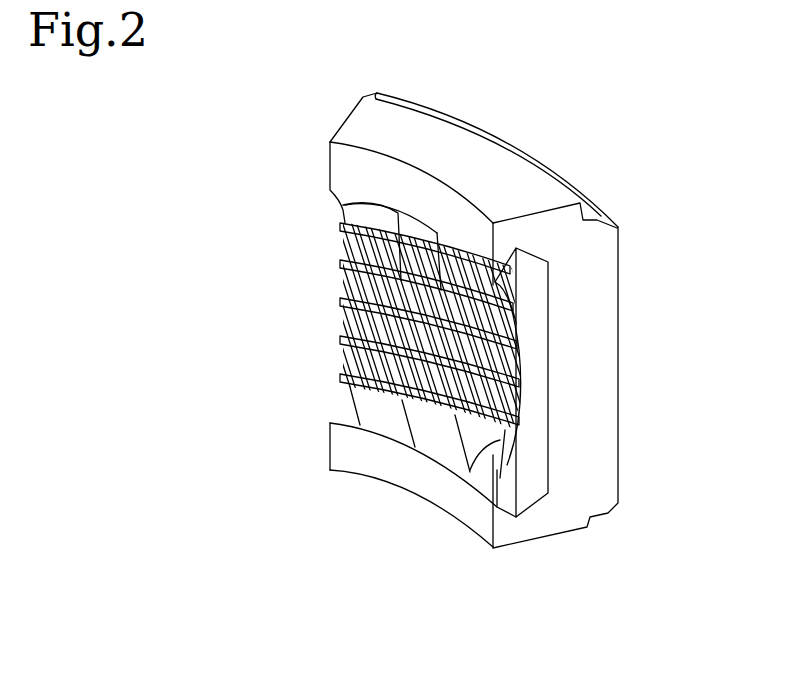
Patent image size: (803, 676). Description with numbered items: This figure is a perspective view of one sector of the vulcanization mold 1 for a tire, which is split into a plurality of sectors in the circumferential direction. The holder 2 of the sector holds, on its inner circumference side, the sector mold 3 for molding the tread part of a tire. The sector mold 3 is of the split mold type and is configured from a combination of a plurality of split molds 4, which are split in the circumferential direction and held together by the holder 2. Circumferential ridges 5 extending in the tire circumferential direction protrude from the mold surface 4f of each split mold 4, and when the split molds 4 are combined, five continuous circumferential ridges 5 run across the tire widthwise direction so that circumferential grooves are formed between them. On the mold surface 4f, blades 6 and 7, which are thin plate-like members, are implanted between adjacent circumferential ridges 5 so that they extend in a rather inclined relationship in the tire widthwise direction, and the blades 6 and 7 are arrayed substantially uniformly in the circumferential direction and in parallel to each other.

The vulcanization mold 1 is at (298, 140).
The holder 2 is at (620, 353).
The sector mold 3 is at (408, 628).
The split mold 4 is at (370, 422).
The mold surface 4f is at (357, 328).
The circumferential ridge 5 is at (340, 228).
The blade 6 is at (433, 280).
The blade 7 is at (385, 260).